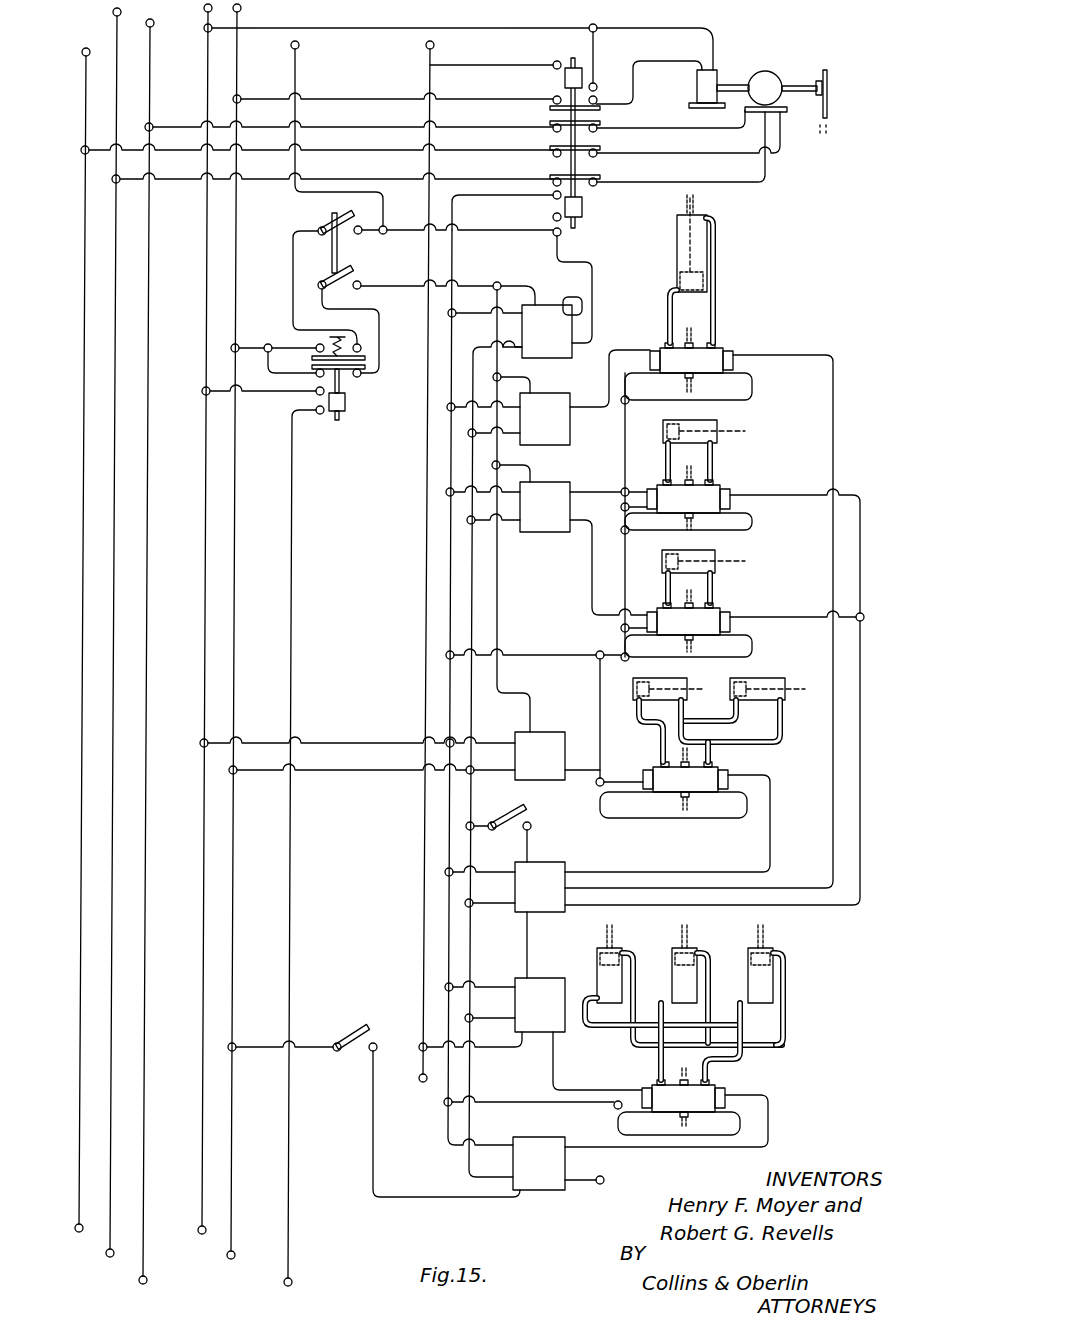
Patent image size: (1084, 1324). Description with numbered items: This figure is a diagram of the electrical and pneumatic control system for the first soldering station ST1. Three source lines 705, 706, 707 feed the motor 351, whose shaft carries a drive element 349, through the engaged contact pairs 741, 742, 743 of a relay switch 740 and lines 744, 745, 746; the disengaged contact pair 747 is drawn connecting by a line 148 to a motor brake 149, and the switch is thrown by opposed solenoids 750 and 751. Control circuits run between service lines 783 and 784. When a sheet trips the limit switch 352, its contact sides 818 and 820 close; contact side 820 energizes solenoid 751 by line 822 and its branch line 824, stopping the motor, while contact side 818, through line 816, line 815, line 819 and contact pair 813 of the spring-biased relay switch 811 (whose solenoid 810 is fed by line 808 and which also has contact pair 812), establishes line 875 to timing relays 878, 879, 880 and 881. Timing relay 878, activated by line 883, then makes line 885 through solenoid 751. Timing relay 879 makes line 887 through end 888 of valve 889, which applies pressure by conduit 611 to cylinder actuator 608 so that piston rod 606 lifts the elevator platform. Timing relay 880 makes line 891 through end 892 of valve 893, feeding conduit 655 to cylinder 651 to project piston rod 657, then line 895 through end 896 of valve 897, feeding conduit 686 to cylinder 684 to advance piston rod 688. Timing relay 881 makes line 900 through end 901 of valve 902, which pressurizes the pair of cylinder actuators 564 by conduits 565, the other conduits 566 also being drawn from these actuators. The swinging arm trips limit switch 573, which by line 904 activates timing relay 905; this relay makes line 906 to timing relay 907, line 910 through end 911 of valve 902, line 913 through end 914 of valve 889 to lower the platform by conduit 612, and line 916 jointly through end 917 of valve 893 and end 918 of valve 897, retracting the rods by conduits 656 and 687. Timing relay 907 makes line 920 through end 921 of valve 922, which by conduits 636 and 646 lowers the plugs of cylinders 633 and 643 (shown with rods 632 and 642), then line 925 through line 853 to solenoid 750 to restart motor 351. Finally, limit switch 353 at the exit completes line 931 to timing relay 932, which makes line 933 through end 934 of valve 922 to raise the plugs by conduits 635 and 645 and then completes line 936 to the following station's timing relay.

The source line 705 is at (150, 62).
The source line 706 is at (116, 55).
The source line 707 is at (84, 97).
The service line 783 is at (238, 73).
The service line 784 is at (208, 62).
The branch line 824 is at (300, 68).
The line 853 is at (445, 70).
The relay switch 740 is at (600, 205).
The contact pair 741 is at (552, 125).
The contact pair 742 is at (552, 150).
The contact pair 743 is at (552, 178).
The line 744 is at (640, 132).
The line 745 is at (640, 157).
The line 746 is at (640, 187).
The contact pair 747 is at (556, 99).
The brake lead 148 is at (637, 70).
The brake coil 149 is at (697, 93).
The solenoid 750 is at (573, 68).
The solenoid 751 is at (565, 208).
The motor 351 is at (770, 78).
The drive shaft coupling 349 is at (828, 110).
The contact side 820 is at (320, 228).
The contact side 818 is at (356, 270).
The limit switch 352 is at (352, 250).
The line 819 is at (292, 272).
The line 816 is at (365, 316).
The line 815 is at (264, 335).
The contact pair 812 is at (310, 357).
The contact pair 813 is at (352, 378).
The solenoid 810 is at (345, 404).
The spring-biased relay switch 811 is at (337, 424).
The line 808 is at (292, 505).
The line 822 is at (515, 233).
The line 875 is at (512, 293).
The line 883 is at (573, 297).
The line 885 is at (594, 317).
The timing relay 878 is at (514, 331).
The timing relay 879 is at (512, 409).
The timing relay 880 is at (512, 496).
The timing relay 881 is at (540, 756).
The line 887 is at (608, 376).
The line 891 is at (584, 491).
The line 895 is at (591, 552).
The valve 889 is at (688, 364).
The valve end 888 is at (652, 353).
The valve end 914 is at (733, 355).
The line 913 is at (778, 355).
The line 916 is at (790, 489).
The piston rod 606 is at (696, 203).
The cylinder actuator 608 is at (677, 236).
The conduit 612 is at (716, 249).
The conduit 611 is at (668, 294).
The first soldering station ST1 is at (799, 251).
The cylinder 651 is at (705, 422).
The conduit 655 is at (664, 462).
The conduit 656 is at (714, 463).
The piston rod 657 is at (722, 438).
The valve 893 is at (688, 498).
The valve end 892 is at (652, 492).
The valve end 917 is at (733, 500).
The cylinder 684 is at (705, 553).
The conduit 686 is at (664, 592).
The conduit 687 is at (714, 592).
The piston rod 688 is at (722, 568).
The valve 897 is at (688, 623).
The valve end 896 is at (652, 632).
The valve end 918 is at (733, 623).
The cylinder 564 is at (752, 680).
The conduits 565 is at (637, 716).
The fluid line 566 is at (683, 708).
The valve 902 is at (685, 779).
The valve end 901 is at (648, 788).
The valve end 911 is at (727, 773).
The line 900 is at (589, 779).
The line 910 is at (597, 878).
The limit switch 573 is at (506, 818).
The line 904 is at (530, 840).
The timing relay 905 is at (509, 887).
The line 906 is at (530, 940).
The timing relay 907 is at (509, 1005).
The piston rod 632 is at (613, 940).
The cylinders 633 is at (600, 972).
The conduit 636 is at (640, 950).
The conduit 635 is at (664, 1002).
The piston rod 642 is at (767, 940).
The cylinder 643 is at (758, 983).
The conduit 645 is at (744, 1041).
The conduit 646 is at (784, 975).
The line 920 is at (575, 1090).
The valve end 921 is at (647, 1092).
The valve 922 is at (678, 1098).
The line 933 is at (770, 1112).
The valve end 934 is at (724, 1090).
The line 925 is at (497, 1050).
The limit switch 353 is at (348, 1036).
The line 931 is at (375, 1148).
The timing relay 932 is at (539, 1163).
The line 936 is at (575, 1180).